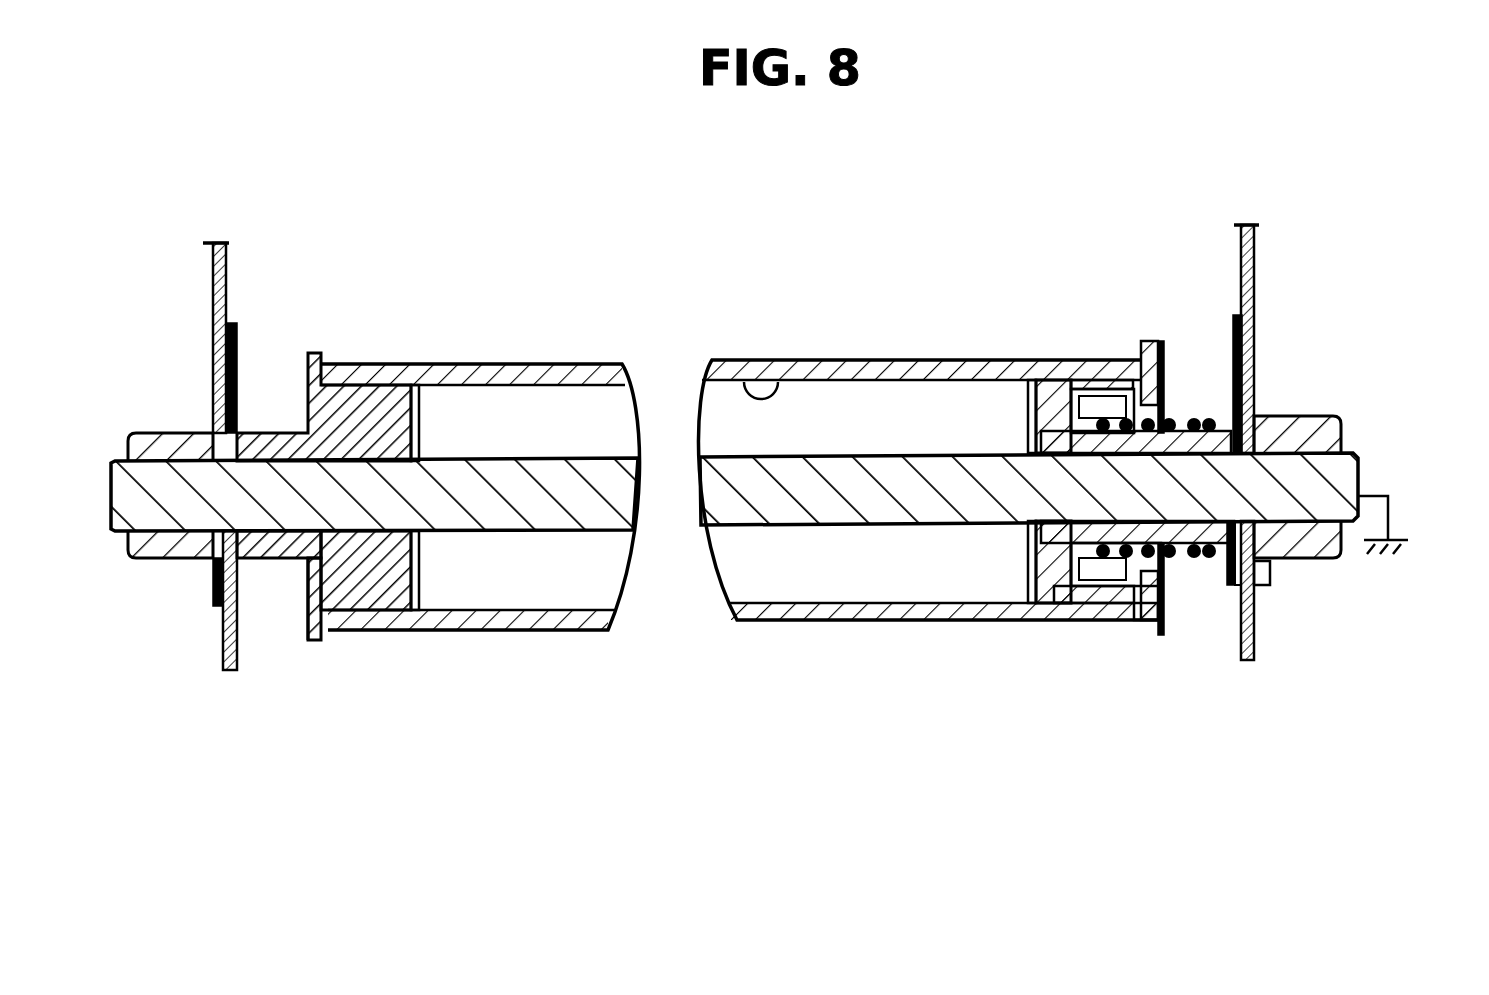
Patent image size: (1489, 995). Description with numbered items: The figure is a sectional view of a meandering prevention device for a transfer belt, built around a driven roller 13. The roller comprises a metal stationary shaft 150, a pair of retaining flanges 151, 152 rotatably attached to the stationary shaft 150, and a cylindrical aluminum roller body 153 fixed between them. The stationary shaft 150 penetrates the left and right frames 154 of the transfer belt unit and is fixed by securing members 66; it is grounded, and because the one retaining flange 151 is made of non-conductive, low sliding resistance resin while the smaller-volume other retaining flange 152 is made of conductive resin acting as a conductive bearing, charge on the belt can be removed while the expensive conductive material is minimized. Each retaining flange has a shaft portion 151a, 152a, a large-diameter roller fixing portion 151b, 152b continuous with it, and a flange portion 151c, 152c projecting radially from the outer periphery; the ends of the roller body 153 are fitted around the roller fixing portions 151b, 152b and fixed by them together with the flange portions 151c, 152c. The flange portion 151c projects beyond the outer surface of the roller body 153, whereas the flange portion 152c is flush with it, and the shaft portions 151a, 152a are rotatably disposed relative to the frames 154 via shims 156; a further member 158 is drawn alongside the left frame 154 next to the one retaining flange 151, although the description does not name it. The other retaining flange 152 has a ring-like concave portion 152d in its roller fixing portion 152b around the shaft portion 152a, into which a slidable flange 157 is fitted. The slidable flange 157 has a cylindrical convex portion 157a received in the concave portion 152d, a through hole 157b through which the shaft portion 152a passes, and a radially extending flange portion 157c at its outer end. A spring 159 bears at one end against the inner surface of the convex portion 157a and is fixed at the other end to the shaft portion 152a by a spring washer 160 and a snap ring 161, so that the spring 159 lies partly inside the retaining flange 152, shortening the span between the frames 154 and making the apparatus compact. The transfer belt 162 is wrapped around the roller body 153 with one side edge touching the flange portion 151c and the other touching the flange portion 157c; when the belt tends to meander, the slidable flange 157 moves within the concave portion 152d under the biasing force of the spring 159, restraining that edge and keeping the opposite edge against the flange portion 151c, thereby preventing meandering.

The driven roller 13 is at (318, 308).
The securing member 66 is at (172, 429).
The stationary shaft 150 is at (1357, 449).
The retaining flange 151 is at (428, 406).
The shaft portion 151a is at (273, 558).
The roller fixing portion 151b is at (394, 632).
The flange portion 151c is at (320, 639).
The retaining flange 152 is at (1020, 396).
The shaft portion 152a is at (1210, 552).
The roller fixing portion 152b is at (1053, 606).
The flange portion 152c is at (1130, 618).
The concave portion 152d is at (1036, 558).
The roller body 153 is at (760, 392).
The frame 154 is at (212, 292).
The shim 156 is at (1228, 411).
The slidable flange 157 is at (1167, 306).
The convex portion 157a is at (1104, 371).
The through hole 157b is at (1092, 394).
The flange portion 157c is at (1146, 338).
The conductive member 158 is at (233, 431).
The spring 159 is at (1174, 414).
The spring washer 160 is at (1251, 627).
The snap ring 161 is at (1250, 583).
The transfer belt 162 is at (885, 356).